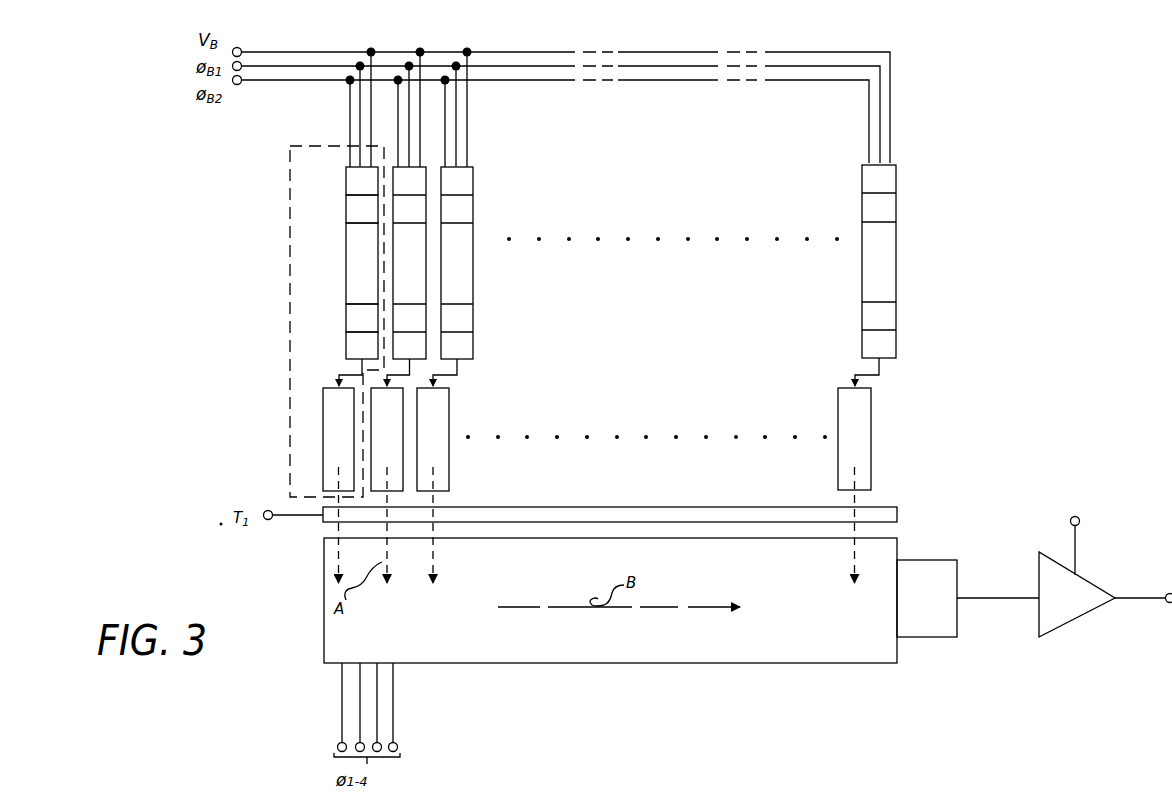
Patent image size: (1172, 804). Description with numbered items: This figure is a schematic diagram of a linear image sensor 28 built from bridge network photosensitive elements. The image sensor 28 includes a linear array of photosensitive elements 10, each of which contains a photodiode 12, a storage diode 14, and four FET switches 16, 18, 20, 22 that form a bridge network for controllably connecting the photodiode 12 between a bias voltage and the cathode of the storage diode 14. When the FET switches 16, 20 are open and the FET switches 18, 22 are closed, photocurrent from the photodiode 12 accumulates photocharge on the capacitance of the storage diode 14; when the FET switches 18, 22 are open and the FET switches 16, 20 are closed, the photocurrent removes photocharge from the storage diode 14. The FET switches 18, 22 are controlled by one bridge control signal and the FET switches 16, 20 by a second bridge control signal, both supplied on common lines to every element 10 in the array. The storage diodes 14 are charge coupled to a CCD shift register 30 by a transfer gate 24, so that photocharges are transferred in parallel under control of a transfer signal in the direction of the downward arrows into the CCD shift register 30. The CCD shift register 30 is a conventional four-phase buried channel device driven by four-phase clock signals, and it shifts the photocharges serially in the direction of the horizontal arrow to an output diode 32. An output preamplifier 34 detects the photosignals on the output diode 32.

The photosensitive element 10 is at (289, 240).
The photodiode 12 is at (346, 273).
The storage diode 14 is at (331, 417).
The FET switch 16 is at (346, 207).
The FET switch 18 is at (346, 343).
The FET switch 20 is at (346, 317).
The FET switch 22 is at (346, 182).
The transfer gate 24 is at (900, 513).
The linear image sensor 28 is at (937, 249).
The CCD shift register 30 is at (786, 655).
The output diode 32 is at (934, 559).
The output preamplifier 34 is at (1081, 584).